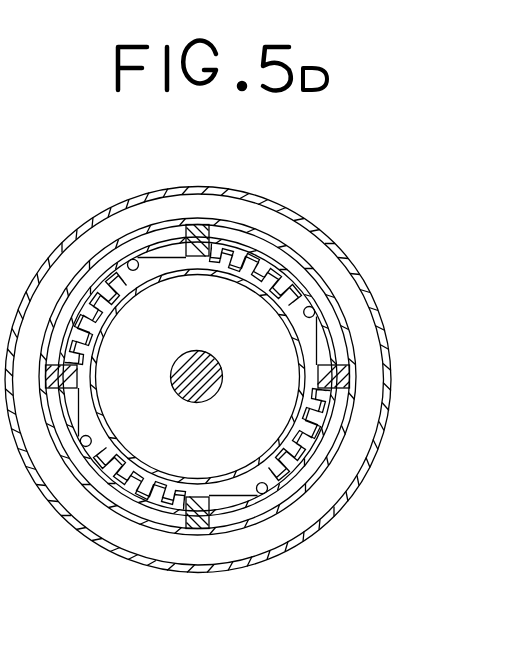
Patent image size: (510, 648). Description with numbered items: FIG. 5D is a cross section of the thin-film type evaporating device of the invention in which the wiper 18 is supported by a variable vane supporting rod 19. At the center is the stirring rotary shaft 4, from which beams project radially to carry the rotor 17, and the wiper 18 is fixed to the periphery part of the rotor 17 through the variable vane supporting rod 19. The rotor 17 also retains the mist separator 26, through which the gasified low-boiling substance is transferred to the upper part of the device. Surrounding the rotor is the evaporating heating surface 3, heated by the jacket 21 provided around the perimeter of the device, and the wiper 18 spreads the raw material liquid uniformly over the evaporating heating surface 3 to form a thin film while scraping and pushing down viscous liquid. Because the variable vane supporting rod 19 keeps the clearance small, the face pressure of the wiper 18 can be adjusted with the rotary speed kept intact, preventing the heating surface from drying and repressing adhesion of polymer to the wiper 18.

The evaporating heating surface 3 is at (277, 502).
The rotary shaft 4 is at (223, 374).
The rotor 17 is at (337, 417).
The wiper 18 is at (343, 373).
The variable vane supporting rod 19 is at (173, 248).
The jacket 21 is at (317, 502).
The mist separator 26 is at (273, 267).